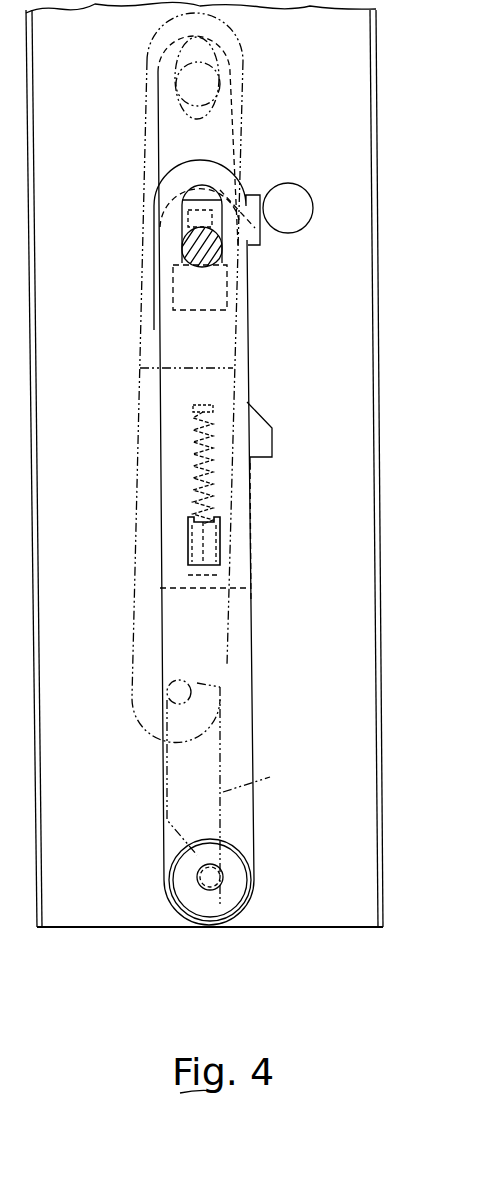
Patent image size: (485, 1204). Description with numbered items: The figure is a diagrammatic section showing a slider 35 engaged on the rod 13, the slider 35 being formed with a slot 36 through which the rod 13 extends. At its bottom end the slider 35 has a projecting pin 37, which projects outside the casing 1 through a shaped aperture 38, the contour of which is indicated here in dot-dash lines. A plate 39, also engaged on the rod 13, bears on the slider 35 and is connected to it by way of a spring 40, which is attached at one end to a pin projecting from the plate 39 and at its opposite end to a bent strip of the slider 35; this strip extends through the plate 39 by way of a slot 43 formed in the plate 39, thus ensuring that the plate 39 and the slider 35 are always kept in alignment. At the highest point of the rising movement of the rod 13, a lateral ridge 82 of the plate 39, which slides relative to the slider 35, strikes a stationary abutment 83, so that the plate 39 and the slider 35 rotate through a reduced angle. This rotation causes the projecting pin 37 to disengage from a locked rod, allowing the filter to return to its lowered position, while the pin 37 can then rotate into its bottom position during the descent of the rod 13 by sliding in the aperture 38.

The casing 1 is at (380, 643).
The rod 13 is at (220, 252).
The slider 35 is at (247, 652).
The slot 36 is at (237, 182).
The projecting pin 37 is at (222, 875).
The shaped aperture 38 is at (221, 459).
The plate 39 is at (240, 570).
The spring 40 is at (217, 460).
The slot 43 is at (190, 572).
The lateral ridge 82 is at (258, 430).
The stationary abutment 83 is at (305, 203).